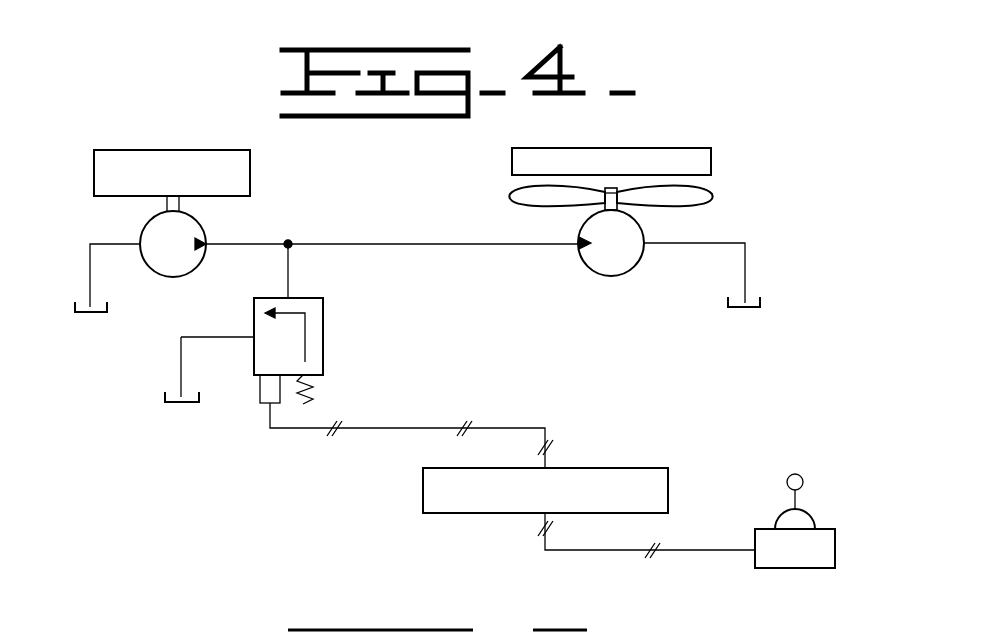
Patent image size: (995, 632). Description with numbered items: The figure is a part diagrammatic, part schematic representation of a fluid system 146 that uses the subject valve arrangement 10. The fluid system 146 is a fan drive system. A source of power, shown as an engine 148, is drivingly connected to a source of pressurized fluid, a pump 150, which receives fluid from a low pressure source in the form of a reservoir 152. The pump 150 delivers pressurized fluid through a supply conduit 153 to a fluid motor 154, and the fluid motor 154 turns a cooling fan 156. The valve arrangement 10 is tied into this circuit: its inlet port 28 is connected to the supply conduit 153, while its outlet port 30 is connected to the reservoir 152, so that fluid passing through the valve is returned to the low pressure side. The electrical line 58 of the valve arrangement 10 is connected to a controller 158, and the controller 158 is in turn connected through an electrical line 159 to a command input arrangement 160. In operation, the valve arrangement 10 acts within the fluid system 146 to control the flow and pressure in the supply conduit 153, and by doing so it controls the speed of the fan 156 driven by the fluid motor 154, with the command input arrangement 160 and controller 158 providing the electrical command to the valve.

The valve arrangement 10 is at (353, 337).
The inlet port 28 is at (292, 297).
The outlet port 30 is at (254, 335).
The electrical line 58 is at (368, 428).
The fluid system 146 is at (145, 135).
The engine 148 is at (250, 168).
The pump 150 is at (140, 236).
The reservoir 152 is at (88, 312).
The supply conduit 153 is at (442, 244).
The fluid motor 154 is at (603, 276).
The cooling fan 156 is at (720, 195).
The controller 158 is at (580, 468).
The electrical line 159 is at (610, 550).
The command input arrangement 160 is at (790, 568).